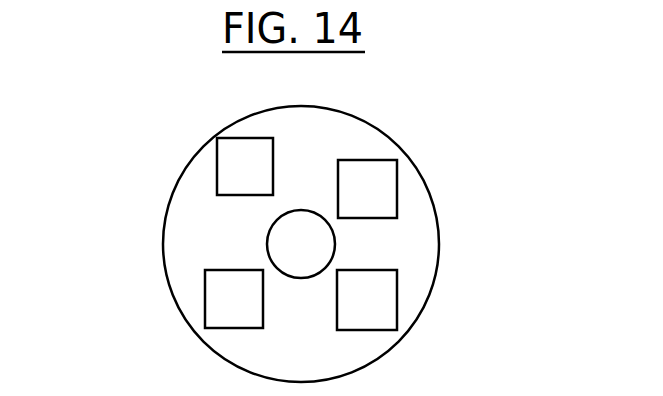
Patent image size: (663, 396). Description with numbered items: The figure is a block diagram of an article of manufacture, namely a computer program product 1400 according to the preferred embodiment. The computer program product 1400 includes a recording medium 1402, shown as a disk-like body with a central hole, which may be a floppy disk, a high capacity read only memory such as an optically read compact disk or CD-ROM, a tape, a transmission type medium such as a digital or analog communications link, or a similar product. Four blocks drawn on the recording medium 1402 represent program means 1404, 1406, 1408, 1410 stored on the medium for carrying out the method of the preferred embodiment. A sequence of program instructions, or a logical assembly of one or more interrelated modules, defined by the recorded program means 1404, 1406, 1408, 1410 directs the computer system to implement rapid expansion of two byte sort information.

The computer program product 1400 is at (377, 110).
The recording medium 1402 is at (170, 200).
The program means 1404 is at (367, 189).
The program means 1406 is at (234, 299).
The program means 1408 is at (245, 166).
The program means 1410 is at (367, 300).